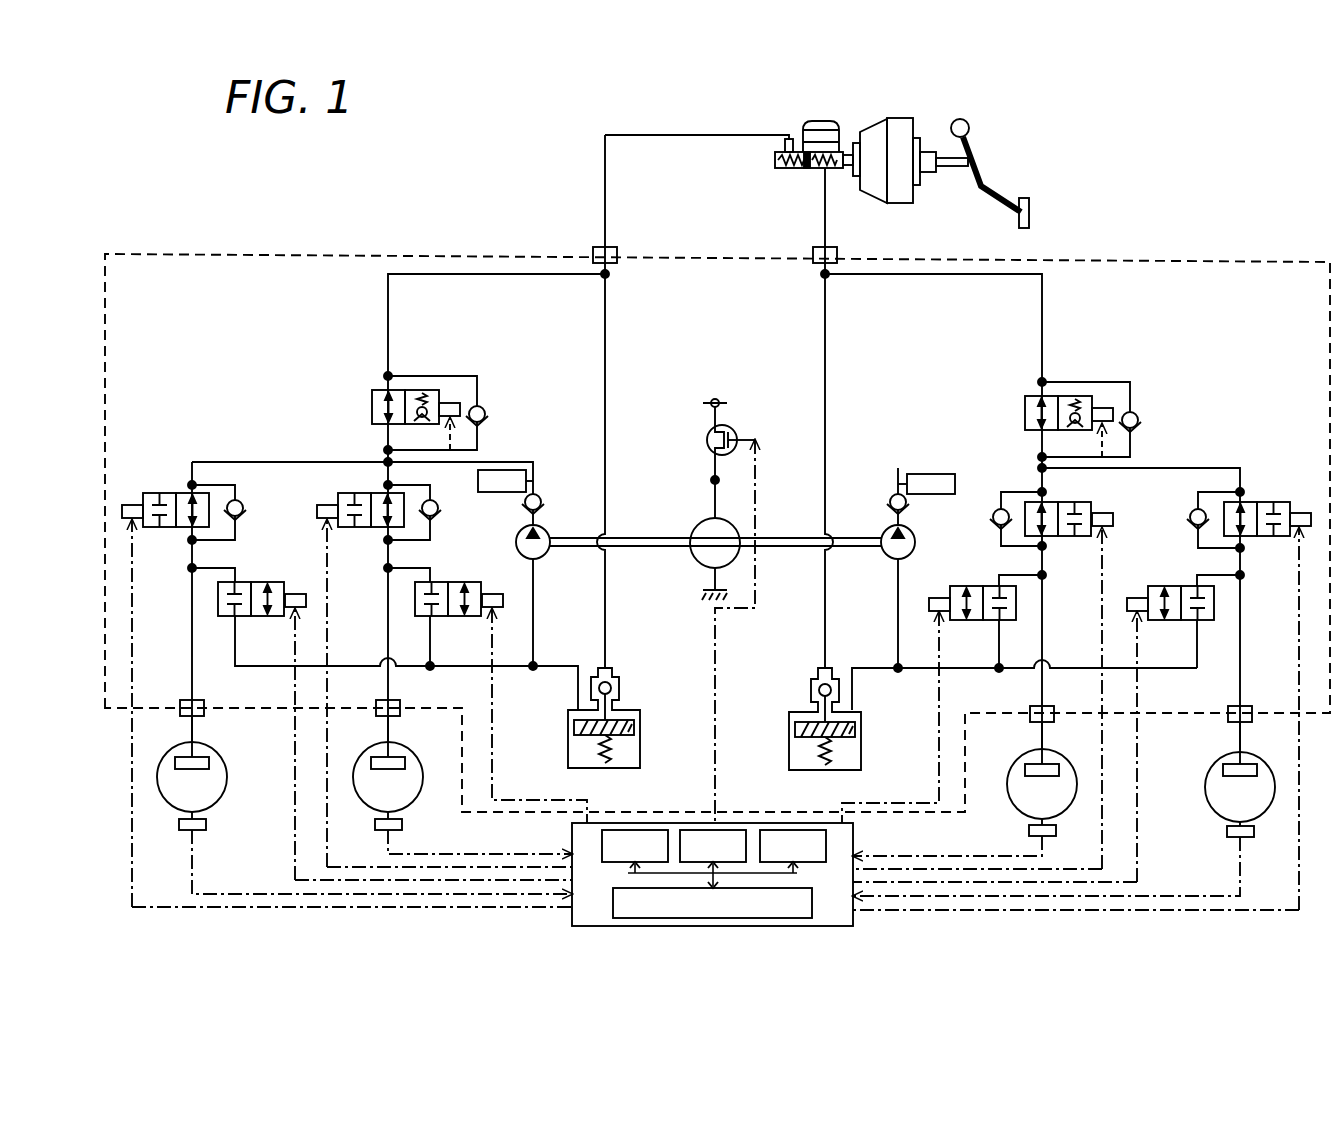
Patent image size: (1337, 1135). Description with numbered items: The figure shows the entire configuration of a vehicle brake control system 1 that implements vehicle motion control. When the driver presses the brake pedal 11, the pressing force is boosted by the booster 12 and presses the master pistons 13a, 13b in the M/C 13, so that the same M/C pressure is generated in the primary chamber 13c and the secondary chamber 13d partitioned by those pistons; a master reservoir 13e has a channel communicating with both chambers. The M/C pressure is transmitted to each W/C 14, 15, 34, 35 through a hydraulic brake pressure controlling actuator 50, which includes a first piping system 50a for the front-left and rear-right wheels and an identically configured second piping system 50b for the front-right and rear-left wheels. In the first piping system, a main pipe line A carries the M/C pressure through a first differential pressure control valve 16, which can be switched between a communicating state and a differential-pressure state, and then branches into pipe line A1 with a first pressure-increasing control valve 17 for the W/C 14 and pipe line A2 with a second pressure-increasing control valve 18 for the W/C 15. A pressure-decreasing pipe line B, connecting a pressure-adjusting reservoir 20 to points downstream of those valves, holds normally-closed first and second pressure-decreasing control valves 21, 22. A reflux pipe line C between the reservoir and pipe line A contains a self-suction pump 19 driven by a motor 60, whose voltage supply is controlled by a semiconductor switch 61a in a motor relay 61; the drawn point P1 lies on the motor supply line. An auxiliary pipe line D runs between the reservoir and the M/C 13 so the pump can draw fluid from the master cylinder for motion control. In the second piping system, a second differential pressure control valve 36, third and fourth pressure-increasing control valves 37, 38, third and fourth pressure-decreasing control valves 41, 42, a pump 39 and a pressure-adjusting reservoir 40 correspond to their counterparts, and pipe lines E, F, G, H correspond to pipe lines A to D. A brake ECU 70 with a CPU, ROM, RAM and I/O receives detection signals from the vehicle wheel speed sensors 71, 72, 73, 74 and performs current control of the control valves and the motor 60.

The vehicle brake control system 1 is at (1097, 152).
The brake pedal 11 is at (975, 150).
The booster 12 is at (895, 118).
The M/C (master cylinder) 13 is at (806, 174).
The master piston 13a is at (810, 170).
The master piston 13b is at (840, 170).
The primary chamber 13c is at (790, 168).
The secondary chamber 13d is at (822, 170).
The master reservoir 13e is at (815, 121).
The W/C (wheel cylinder) of front-left wheel 14 is at (175, 765).
The W/C (wheel cylinder) of rear-right wheel 15 is at (378, 765).
The first differential pressure control valve 16 is at (372, 408).
The first pressure-increasing control valve 17 is at (192, 488).
The second pressure-increasing control valve 18 is at (375, 495).
The self-suction pump 19 is at (516, 544).
The pressure-adjusting reservoir 20 is at (562, 758).
The first pressure-decreasing control valve 21 is at (240, 582).
The second pressure-decreasing control valve 22 is at (437, 582).
The W/C (wheel cylinder) of front-right wheel 34 is at (1258, 770).
The W/C (wheel cylinder) of rear-left wheel 35 is at (1079, 757).
The second differential pressure control valve 36 is at (1025, 410).
The third pressure-increasing control valve 37 is at (1240, 494).
The fourth pressure-increasing control valve 38 is at (1055, 502).
The pump 39 is at (915, 542).
The pressure-adjusting reservoir 40 is at (864, 758).
The third pressure-decreasing control valve 41 is at (1190, 586).
The fourth pressure-decreasing control valve 42 is at (990, 586).
The hydraulic brake pressure controlling actuator 50 is at (1318, 260).
The first piping system 50a is at (180, 306).
The second piping system 50b is at (1257, 320).
The motor 60 is at (695, 526).
The motor relay 61 is at (708, 428).
The semiconductor switch 61a is at (737, 440).
The brake ECU 70 is at (855, 828).
The vehicle wheel speed sensor 71 is at (210, 826).
The vehicle wheel speed sensor 72 is at (403, 826).
The vehicle wheel speed sensor 73 is at (1027, 832).
The vehicle wheel speed sensor 74 is at (1225, 832).
The motor terminal voltage monitor point P1 is at (712, 480).
The pipe line A is at (394, 277).
The pipe line A1 is at (190, 642).
The pipe line A2 is at (387, 638).
The pipe line B is at (445, 670).
The pipe line C is at (500, 470).
The pipe line D is at (607, 318).
The pipe line E is at (1035, 277).
The pipe line F is at (982, 672).
The pipe line G is at (920, 474).
The pipe line H is at (825, 318).